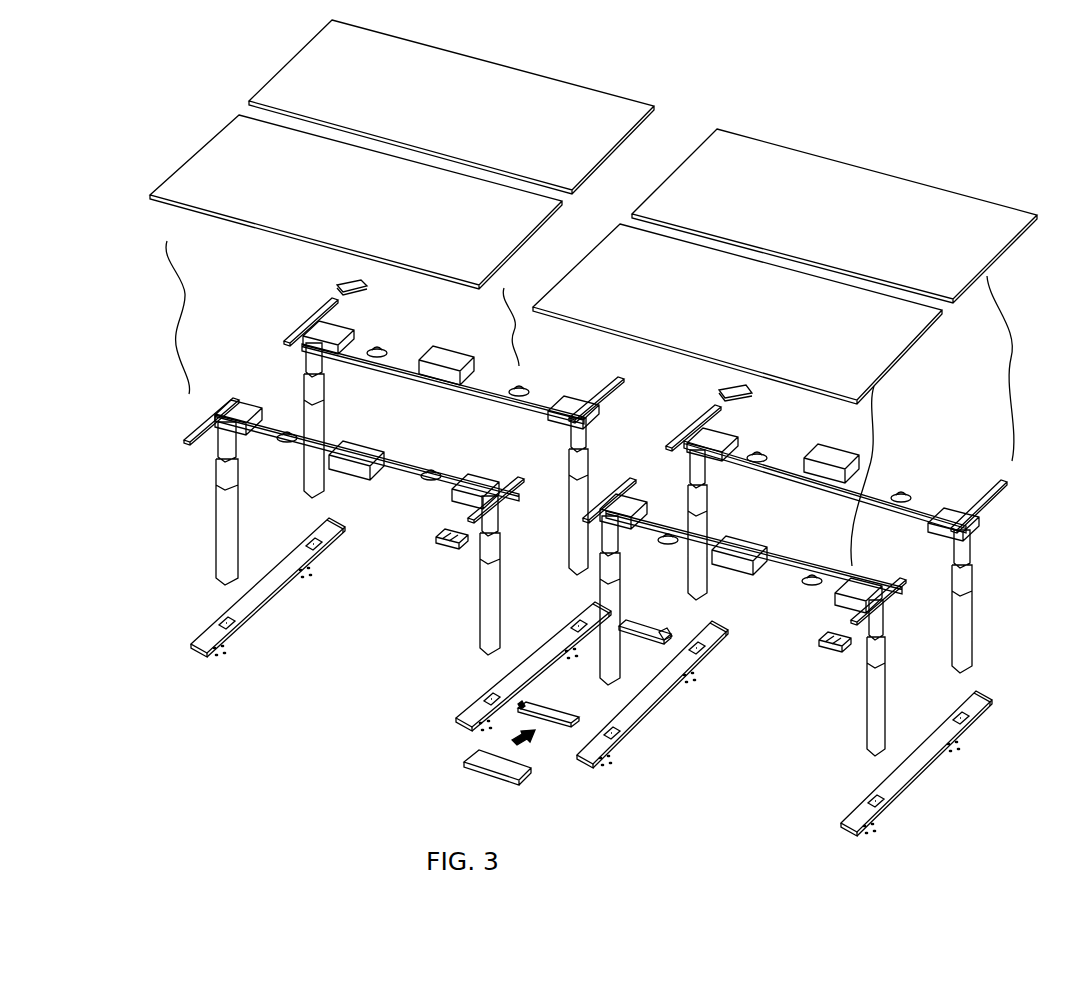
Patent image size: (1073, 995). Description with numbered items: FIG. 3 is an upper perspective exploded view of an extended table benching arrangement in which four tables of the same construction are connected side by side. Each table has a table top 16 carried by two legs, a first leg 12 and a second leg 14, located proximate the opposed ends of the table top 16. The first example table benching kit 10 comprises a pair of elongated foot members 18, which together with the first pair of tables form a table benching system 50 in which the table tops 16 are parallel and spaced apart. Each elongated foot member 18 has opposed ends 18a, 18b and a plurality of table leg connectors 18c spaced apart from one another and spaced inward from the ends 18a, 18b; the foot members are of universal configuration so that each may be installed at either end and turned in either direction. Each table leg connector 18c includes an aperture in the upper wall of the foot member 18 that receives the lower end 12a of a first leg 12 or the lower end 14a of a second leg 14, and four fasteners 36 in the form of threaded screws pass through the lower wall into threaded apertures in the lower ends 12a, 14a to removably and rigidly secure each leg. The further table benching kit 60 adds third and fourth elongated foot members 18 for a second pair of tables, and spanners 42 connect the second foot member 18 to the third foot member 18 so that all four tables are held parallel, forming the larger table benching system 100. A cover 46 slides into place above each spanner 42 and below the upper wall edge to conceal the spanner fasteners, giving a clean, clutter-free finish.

The table benching system 100 is at (593, 452).
The table benching system 50 is at (1022, 160).
The table benching kit 10 is at (572, 812).
The table benching kit 60 is at (275, 740).
The table top 16 is at (285, 80).
The second leg 14 is at (310, 382).
The lower end of second leg 14a is at (308, 482).
The first leg 12 is at (570, 482).
The lower end of first leg 12a is at (598, 596).
The elongated foot member 18 is at (278, 595).
The opposed end of elongated foot member 18a is at (188, 648).
The opposed end of elongated foot member 18b is at (343, 520).
The table leg connector 18c is at (327, 546).
The fastener 36 is at (320, 573).
The spanner 42 is at (553, 728).
The cover 46 is at (493, 763).